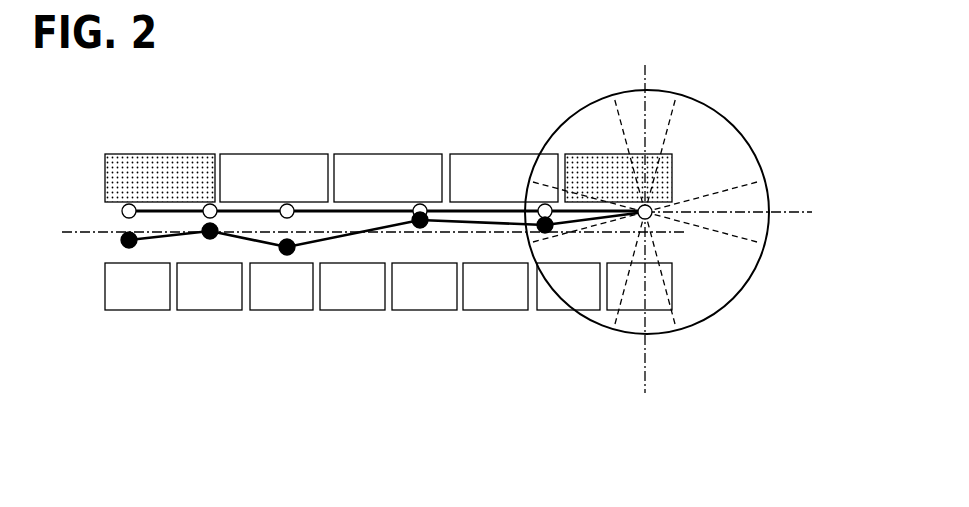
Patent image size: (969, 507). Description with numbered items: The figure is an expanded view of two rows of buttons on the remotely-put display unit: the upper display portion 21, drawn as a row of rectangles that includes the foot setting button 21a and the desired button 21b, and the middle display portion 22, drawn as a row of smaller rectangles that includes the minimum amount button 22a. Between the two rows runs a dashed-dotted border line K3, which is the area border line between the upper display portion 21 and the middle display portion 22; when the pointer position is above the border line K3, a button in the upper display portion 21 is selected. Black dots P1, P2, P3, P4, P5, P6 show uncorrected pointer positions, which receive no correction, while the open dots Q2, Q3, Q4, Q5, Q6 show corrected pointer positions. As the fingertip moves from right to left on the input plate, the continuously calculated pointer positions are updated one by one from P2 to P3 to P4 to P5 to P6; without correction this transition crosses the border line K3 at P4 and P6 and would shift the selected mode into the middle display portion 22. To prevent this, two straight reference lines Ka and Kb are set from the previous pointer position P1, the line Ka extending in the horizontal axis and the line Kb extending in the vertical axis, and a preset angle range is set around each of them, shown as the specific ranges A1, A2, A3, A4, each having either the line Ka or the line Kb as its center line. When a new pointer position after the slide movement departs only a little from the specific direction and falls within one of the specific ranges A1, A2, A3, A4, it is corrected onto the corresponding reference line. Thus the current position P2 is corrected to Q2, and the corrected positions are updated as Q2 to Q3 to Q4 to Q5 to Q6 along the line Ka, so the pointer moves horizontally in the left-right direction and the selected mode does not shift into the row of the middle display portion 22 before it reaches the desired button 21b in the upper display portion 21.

The upper display portion 21 is at (362, 136).
The foot setting button 21a is at (593, 170).
The desired button 21b is at (163, 175).
The middle display portion 22 is at (362, 331).
The minimum amount button 22a is at (148, 283).
The border line K3 is at (93, 230).
The reference line Ka is at (795, 212).
The reference line Kb is at (645, 371).
The specific range A1 is at (533, 238).
The specific range A2 is at (657, 102).
The specific range A3 is at (757, 233).
The specific range A4 is at (631, 328).
The previous pointer position P1 is at (649, 217).
The uncorrected pointer position P2 is at (545, 233).
The uncorrected pointer position P3 is at (420, 228).
The uncorrected pointer position P4 is at (287, 255).
The uncorrected pointer position P5 is at (210, 239).
The uncorrected pointer position P6 is at (129, 248).
The corrected pointer position Q2 is at (545, 203).
The corrected pointer position Q3 is at (420, 203).
The corrected pointer position Q4 is at (287, 203).
The corrected pointer position Q5 is at (210, 203).
The corrected pointer position Q6 is at (129, 203).